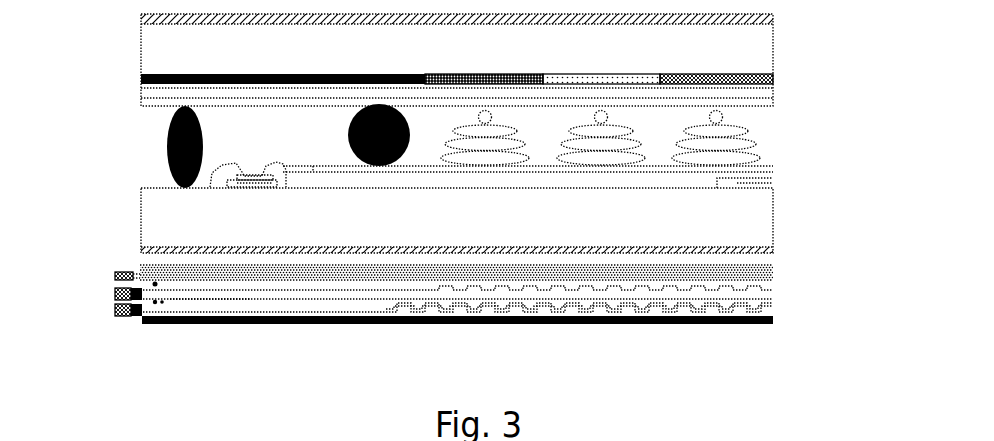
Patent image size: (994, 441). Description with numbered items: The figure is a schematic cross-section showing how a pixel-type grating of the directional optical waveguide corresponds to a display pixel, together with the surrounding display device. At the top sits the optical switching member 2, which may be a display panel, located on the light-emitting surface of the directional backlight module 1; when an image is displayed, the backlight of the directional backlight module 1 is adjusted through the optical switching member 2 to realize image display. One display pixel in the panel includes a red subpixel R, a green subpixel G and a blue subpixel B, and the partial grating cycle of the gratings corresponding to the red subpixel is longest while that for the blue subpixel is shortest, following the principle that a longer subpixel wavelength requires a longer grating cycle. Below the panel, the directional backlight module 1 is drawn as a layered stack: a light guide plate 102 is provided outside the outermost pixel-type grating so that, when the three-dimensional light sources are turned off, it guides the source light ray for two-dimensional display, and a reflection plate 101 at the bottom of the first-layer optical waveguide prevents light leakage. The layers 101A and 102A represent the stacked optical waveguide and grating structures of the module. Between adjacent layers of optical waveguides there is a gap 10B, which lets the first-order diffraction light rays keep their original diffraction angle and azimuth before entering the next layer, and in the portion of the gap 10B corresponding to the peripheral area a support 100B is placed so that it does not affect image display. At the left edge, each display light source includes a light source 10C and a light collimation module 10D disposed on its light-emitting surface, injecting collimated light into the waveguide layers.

The directional backlight module 1 is at (476, 323).
The optical switching member 2 is at (773, 16).
The reflection plate 101 is at (773, 323).
The first electrode layer 101A is at (773, 293).
The light guide plate 102 is at (773, 272).
The second electrode layer 102A is at (773, 313).
The gap 10B is at (267, 300).
The light source 10C is at (115, 311).
The light collimation module 10D is at (135, 318).
The support 100B is at (198, 305).